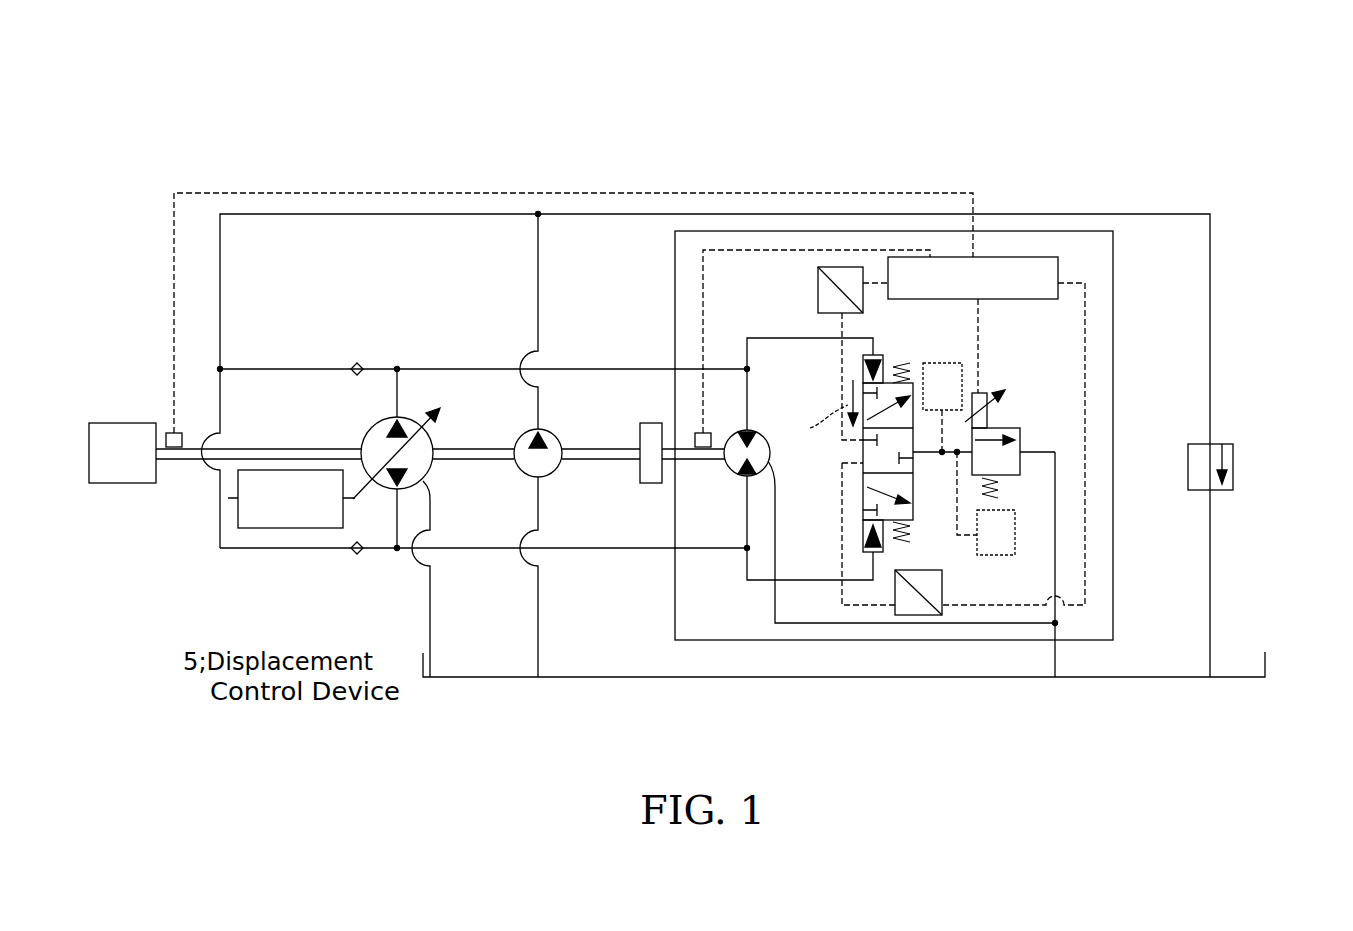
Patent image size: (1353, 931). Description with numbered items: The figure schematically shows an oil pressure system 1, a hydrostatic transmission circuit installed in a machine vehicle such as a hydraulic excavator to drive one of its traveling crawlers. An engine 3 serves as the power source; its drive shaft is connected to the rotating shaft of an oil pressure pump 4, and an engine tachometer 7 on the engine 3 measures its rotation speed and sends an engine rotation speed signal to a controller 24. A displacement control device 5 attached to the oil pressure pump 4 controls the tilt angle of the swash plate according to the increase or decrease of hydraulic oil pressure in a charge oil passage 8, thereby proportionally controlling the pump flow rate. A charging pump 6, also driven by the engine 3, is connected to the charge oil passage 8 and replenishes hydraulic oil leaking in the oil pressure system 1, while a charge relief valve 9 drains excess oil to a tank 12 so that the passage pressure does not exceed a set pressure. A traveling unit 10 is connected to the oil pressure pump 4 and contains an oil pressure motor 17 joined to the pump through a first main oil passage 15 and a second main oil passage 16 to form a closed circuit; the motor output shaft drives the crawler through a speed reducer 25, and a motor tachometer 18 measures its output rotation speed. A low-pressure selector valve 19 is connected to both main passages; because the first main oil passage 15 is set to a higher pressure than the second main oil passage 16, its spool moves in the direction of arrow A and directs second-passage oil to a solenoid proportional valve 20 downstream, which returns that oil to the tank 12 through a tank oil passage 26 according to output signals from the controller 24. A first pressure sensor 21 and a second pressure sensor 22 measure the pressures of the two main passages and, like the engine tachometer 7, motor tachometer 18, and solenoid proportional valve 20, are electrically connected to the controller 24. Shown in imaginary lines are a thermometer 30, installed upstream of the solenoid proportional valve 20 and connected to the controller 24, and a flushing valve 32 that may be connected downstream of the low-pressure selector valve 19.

The oil pressure system 1 is at (296, 172).
The engine 3 is at (122, 483).
The oil pressure pump 4 is at (365, 436).
The displacement control device 5 is at (290, 528).
The charging pump 6 is at (522, 471).
The engine tachometer 7 is at (172, 431).
The charge oil passage 8 is at (391, 214).
The charge relief valve 9 is at (1210, 440).
The traveling unit 10 is at (1113, 312).
The tank 12 is at (1266, 665).
The first main oil passage 15 is at (604, 369).
The second main oil passage 16 is at (608, 548).
The oil pressure motor 17 is at (770, 458).
The motor tachometer 18 is at (702, 433).
The low-pressure selector valve 19 is at (862, 505).
The solenoid proportional valve 20 is at (1003, 428).
The first pressure sensor 21 is at (818, 292).
The second pressure sensor 22 is at (918, 615).
The controller 24 is at (951, 299).
The speed reducer 25 is at (640, 452).
The tank oil passage 26 is at (1057, 525).
The thermometer 30 is at (950, 363).
The flushing valve 32 is at (993, 556).